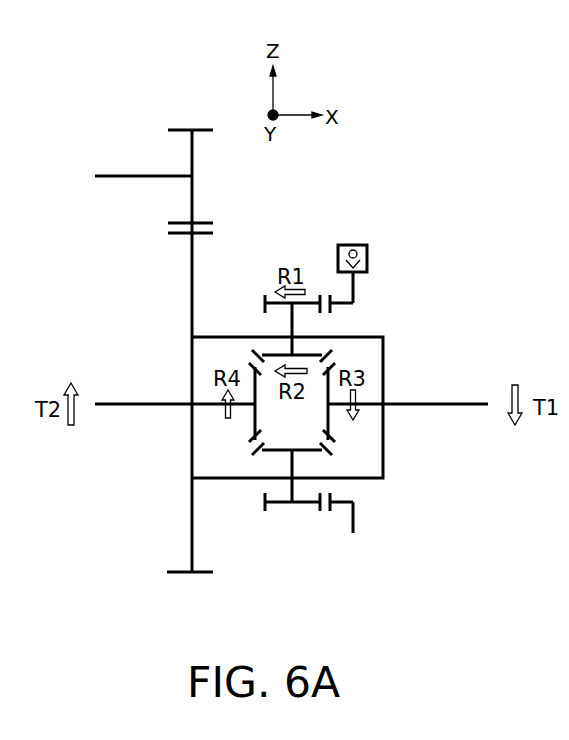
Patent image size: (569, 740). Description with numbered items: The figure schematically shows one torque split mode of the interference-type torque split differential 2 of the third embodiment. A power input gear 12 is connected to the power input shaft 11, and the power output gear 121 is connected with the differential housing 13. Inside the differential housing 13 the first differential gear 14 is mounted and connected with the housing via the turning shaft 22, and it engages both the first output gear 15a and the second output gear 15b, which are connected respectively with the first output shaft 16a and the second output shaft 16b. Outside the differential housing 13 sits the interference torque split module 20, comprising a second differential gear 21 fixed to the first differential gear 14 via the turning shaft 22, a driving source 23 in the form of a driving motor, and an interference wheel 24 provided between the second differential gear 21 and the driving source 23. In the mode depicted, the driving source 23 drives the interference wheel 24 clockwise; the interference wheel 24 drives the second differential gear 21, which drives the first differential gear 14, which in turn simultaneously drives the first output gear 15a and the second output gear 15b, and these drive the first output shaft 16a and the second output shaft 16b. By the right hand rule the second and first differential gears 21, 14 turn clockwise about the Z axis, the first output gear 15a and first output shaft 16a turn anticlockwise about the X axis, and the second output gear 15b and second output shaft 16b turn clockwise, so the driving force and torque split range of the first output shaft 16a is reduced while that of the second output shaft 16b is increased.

The interference-type torque split differential 2 is at (112, 85).
The power input shaft 11 is at (137, 175).
The power input gear 12 is at (190, 152).
The differential housing 13 is at (212, 335).
The first differential gear 14 is at (307, 353).
The first output gear 15a is at (330, 410).
The second output gear 15b is at (253, 425).
The first output shaft 16a is at (408, 405).
The second output shaft 16b is at (160, 405).
The interference torque split module 20 is at (398, 235).
The second differential gear 21 is at (277, 306).
The turning shaft 22 is at (270, 330).
The driving source 23 is at (352, 244).
The interference wheel 24 is at (348, 290).
The power output gear 121 is at (190, 298).